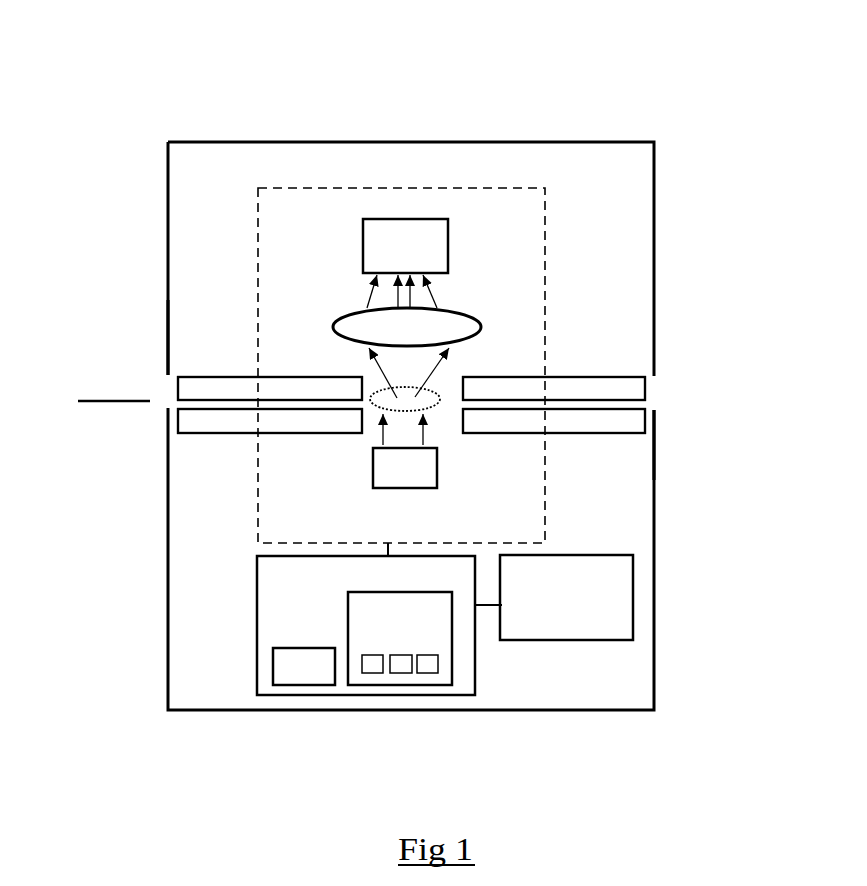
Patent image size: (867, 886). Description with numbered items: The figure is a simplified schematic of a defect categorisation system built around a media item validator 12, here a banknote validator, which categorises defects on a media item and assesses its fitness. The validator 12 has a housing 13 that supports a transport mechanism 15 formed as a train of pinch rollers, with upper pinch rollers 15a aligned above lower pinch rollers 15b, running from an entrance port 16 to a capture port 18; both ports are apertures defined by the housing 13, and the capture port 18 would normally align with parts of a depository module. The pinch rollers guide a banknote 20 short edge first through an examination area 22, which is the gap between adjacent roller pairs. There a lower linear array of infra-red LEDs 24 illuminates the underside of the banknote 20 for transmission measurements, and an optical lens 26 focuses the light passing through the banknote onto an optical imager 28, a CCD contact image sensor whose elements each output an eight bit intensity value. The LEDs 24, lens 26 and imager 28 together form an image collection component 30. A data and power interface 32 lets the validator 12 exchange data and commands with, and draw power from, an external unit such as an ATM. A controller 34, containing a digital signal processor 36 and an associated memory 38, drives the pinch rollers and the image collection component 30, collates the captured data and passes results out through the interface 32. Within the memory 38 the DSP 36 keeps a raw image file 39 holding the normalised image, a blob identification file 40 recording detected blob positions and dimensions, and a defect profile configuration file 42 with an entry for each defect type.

The media item validator 12 is at (640, 85).
The housing 13 is at (445, 418).
The transport mechanism 15 is at (586, 454).
The upper pinch rollers 15a is at (203, 377).
The lower pinch rollers 15b is at (673, 468).
The entrance port 16 is at (134, 349).
The capture port 18 is at (685, 418).
The banknote 20 is at (85, 399).
The examination area 22 is at (420, 387).
The infra-red LEDs 24 is at (372, 461).
The optical lens 26 is at (407, 353).
The optical imager 28 is at (428, 227).
The image collection component 30 is at (545, 503).
The data and power interface 32 is at (611, 597).
The controller 34 is at (337, 625).
The digital signal processor 36 is at (273, 673).
The memory 38 is at (452, 668).
The raw image file 39 is at (362, 667).
The blob identification file 40 is at (400, 673).
The defect profile configuration file 42 is at (432, 673).